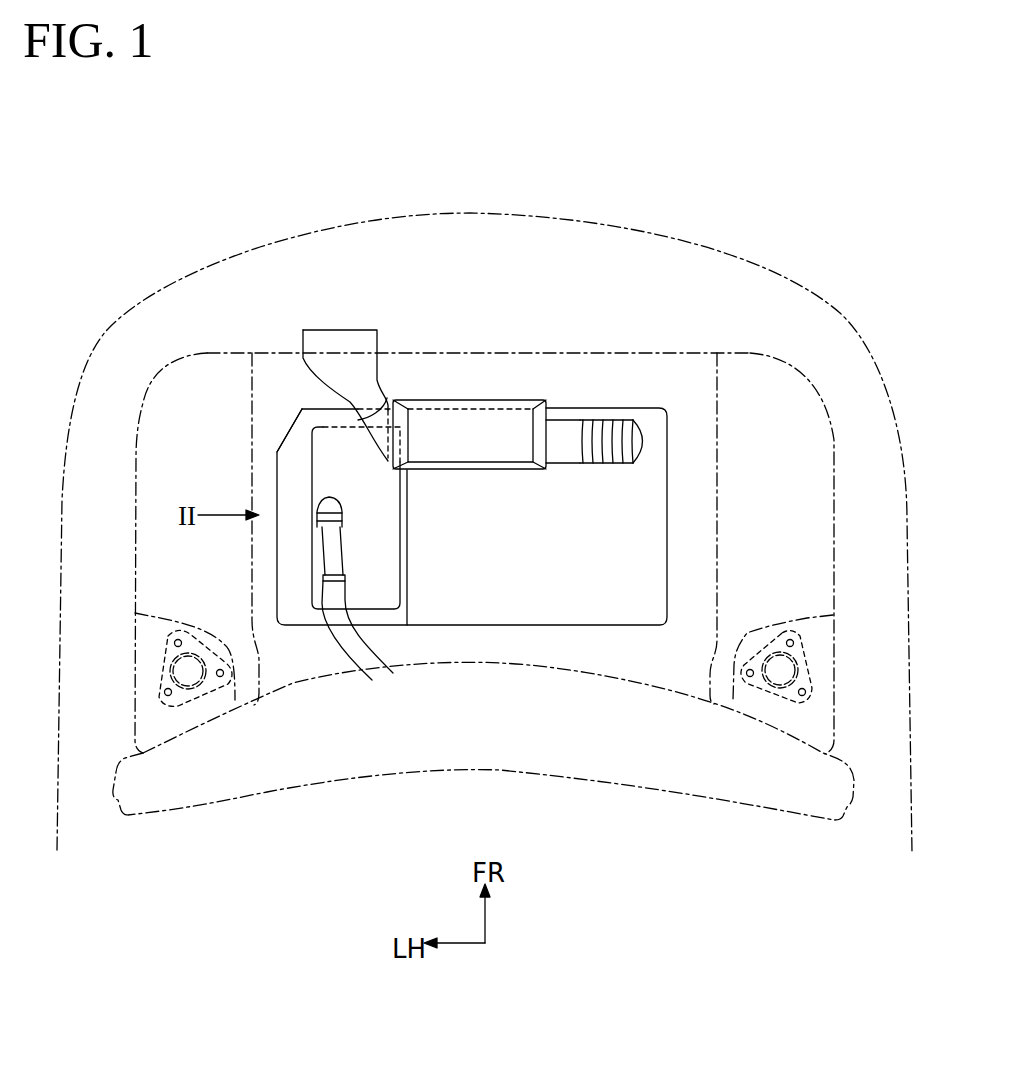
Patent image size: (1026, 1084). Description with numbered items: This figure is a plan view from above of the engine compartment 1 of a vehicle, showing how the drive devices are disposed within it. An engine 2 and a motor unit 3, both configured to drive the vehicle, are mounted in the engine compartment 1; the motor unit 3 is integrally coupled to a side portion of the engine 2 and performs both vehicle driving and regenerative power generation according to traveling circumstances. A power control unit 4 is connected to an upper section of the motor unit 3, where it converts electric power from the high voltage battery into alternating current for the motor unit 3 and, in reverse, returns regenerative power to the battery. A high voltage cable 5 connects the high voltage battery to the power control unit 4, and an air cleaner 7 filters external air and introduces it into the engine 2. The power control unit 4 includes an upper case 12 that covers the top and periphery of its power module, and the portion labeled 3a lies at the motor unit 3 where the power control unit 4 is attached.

The engine compartment 1 is at (777, 393).
The engine 2 is at (582, 612).
The motor unit 3 is at (315, 637).
The housing chamfered portion 3a is at (293, 457).
The power control unit 4 is at (320, 428).
The high voltage cable 5 is at (355, 658).
The air cleaner 7 is at (442, 400).
The upper case 12 is at (385, 575).